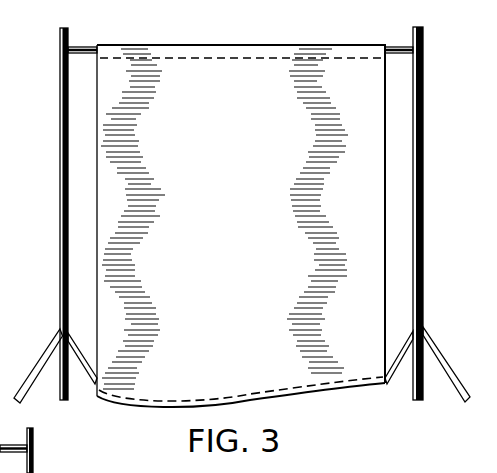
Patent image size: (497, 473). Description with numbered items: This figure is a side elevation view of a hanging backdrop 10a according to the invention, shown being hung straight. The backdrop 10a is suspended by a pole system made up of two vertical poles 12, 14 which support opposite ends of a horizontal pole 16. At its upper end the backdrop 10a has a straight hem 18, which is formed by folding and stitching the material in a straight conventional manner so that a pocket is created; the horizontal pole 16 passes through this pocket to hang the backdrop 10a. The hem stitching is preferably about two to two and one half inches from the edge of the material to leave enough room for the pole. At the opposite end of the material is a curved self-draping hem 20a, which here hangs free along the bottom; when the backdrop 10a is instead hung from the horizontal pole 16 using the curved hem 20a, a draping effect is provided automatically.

The backdrop 10a is at (243, 248).
The vertical pole 12 is at (60, 135).
The vertical pole 14 is at (423, 193).
The horizontal pole 16 is at (78, 47).
The straight hem 18 is at (200, 58).
The curved self-draping hem 20a is at (190, 396).